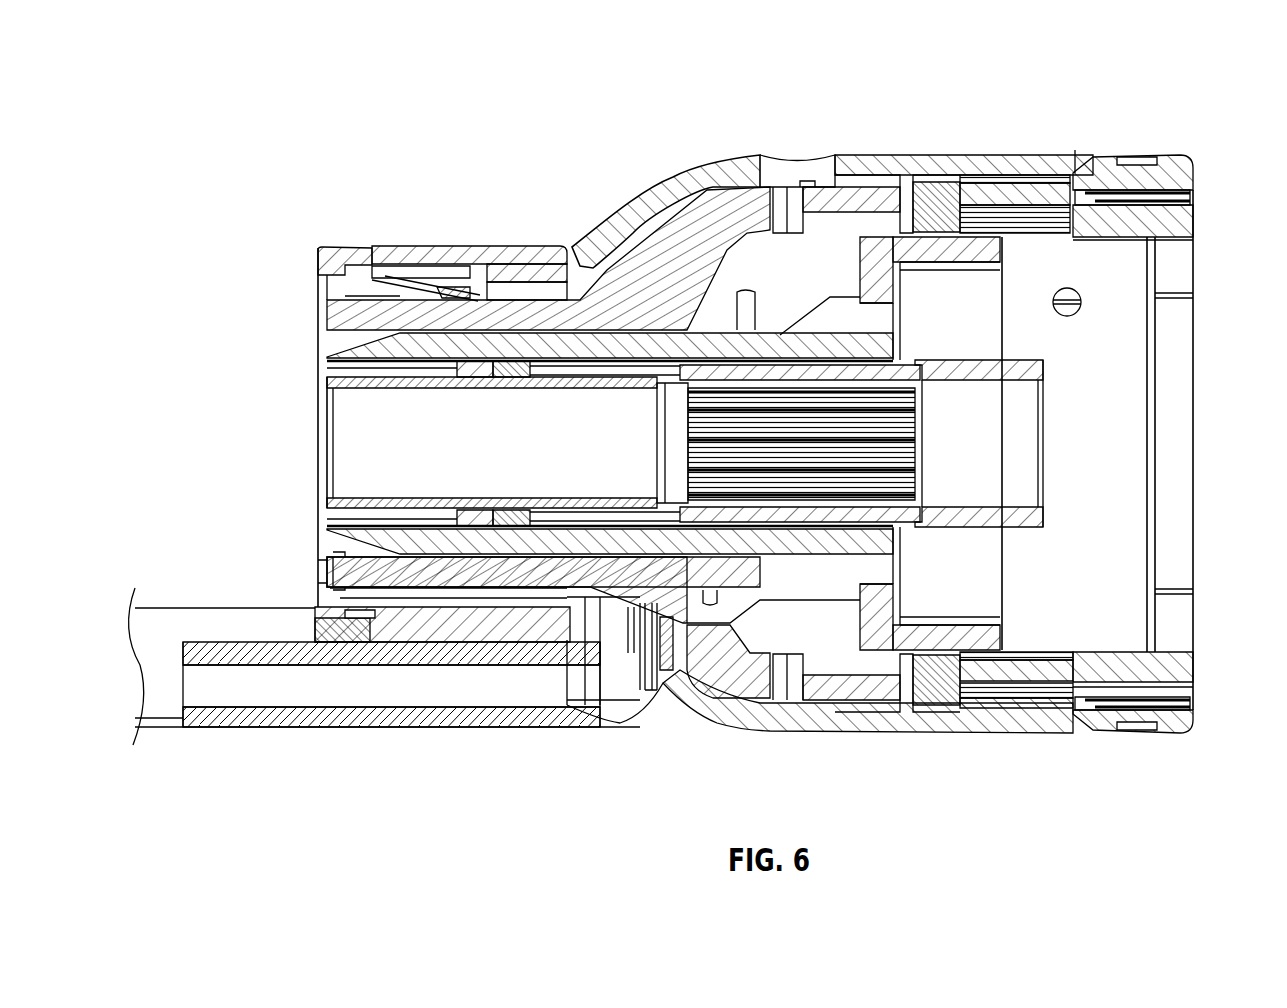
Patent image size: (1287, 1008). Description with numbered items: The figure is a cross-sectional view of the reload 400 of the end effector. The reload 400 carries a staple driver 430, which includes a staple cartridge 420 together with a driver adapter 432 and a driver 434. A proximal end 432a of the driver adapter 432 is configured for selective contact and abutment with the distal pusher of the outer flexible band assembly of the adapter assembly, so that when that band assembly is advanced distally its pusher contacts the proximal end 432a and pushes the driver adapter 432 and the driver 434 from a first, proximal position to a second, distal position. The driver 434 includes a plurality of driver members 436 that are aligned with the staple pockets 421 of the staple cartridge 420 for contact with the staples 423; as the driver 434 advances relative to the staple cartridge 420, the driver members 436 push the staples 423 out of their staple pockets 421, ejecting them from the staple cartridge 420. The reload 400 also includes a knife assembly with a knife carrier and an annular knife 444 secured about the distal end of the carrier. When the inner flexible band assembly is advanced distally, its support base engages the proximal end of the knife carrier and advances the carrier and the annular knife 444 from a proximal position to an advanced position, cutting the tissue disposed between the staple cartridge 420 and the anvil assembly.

The reload 400 is at (842, 86).
The staple cartridge 420 is at (1177, 158).
The staple pockets 421 is at (1190, 187).
The staples 423 is at (1110, 183).
The staple driver 430 is at (684, 694).
The driver adapter 432 is at (520, 570).
The proximal end of driver adapter 432a is at (318, 563).
The driver 434 is at (925, 692).
The driver members 436 is at (1015, 687).
The annular knife 444 is at (1130, 453).